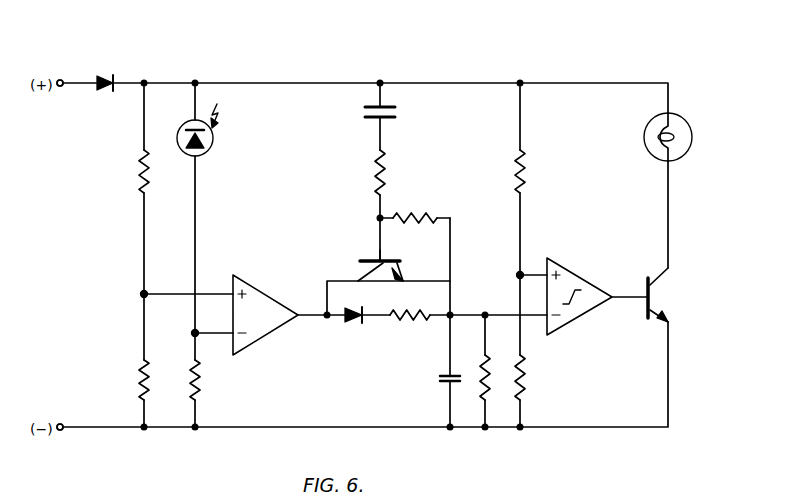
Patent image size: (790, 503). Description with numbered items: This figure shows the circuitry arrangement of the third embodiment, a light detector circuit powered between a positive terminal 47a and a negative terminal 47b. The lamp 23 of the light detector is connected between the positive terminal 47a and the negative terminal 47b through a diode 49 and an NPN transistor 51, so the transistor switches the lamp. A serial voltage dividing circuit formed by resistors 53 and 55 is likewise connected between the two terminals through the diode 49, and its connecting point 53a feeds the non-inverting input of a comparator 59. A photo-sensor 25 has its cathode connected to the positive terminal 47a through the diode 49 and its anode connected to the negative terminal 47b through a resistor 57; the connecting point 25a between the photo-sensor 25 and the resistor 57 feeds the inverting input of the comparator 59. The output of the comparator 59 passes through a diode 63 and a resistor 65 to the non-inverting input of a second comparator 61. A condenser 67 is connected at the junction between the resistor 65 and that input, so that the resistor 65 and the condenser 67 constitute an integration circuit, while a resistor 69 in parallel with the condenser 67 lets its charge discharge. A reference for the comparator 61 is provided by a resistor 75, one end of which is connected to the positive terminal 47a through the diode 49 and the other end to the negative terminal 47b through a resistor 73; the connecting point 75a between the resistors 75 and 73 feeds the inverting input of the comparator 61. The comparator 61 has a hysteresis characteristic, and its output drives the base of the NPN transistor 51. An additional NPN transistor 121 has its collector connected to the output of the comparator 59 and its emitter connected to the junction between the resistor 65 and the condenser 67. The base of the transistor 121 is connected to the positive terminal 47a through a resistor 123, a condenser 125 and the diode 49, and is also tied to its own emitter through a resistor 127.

The positive terminal 47a is at (60, 79).
The negative terminal 47b is at (60, 431).
The diode 49 is at (105, 76).
The resistor 53 is at (139, 168).
The resistor 55 is at (140, 371).
The resistor 57 is at (201, 378).
The photo-sensor 25 is at (214, 140).
The connecting point 53a is at (140, 296).
The connecting point 25a is at (193, 331).
The comparator 59 is at (273, 296).
The condenser 125 is at (398, 112).
The resistor 123 is at (386, 175).
The resistor 127 is at (420, 212).
The NPN transistor 121 is at (368, 252).
The diode 63 is at (356, 325).
The resistor 65 is at (410, 322).
The condenser 67 is at (433, 385).
The resistor 69 is at (496, 378).
The resistor 73 is at (528, 378).
The resistor 75 is at (526, 175).
The connecting point 75a is at (522, 270).
The comparator 61 is at (596, 286).
The NPN transistor 51 is at (655, 297).
The lamp 23 is at (646, 155).